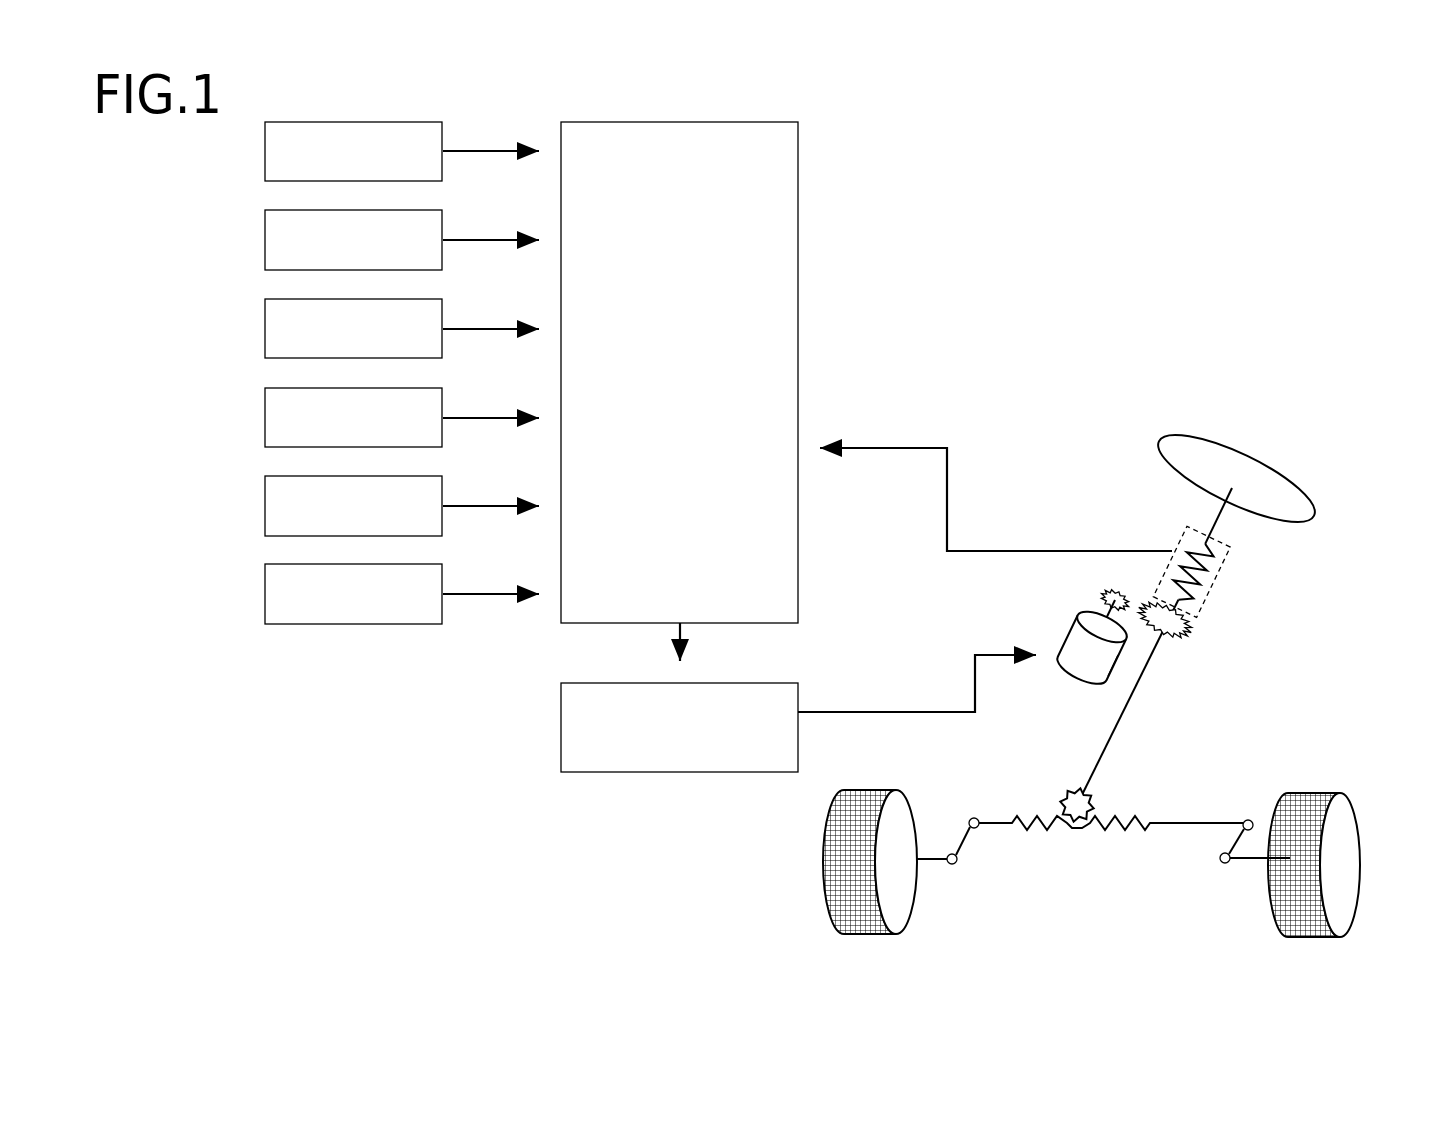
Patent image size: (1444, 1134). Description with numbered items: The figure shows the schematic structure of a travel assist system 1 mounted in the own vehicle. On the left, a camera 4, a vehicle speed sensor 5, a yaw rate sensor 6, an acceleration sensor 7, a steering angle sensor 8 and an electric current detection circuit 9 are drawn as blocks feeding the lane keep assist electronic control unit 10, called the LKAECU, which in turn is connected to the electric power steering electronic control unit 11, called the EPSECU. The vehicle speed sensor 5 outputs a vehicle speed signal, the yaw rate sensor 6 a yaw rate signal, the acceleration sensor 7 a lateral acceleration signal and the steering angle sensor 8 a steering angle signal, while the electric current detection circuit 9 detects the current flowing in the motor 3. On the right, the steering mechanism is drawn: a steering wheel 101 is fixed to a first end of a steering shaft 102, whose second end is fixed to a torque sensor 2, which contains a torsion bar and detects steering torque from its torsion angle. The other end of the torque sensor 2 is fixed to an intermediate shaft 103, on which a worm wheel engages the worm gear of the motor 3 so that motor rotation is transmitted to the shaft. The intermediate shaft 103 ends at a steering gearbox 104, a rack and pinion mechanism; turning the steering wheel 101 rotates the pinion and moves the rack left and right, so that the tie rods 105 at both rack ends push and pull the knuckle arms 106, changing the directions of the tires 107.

The travel assist system 1 is at (948, 180).
The torque sensor 2 is at (1218, 572).
The motor 3 is at (1080, 672).
The camera 4 is at (352, 121).
The vehicle speed sensor 5 is at (352, 209).
The yaw rate sensor 6 is at (352, 298).
The acceleration sensor 7 is at (352, 387).
The steering angle sensor 8 is at (352, 475).
The electric current detection circuit 9 is at (352, 563).
The lane keep assist electronic control unit 10 is at (798, 152).
The electric power steering electronic control unit 11 is at (740, 683).
The steering wheel 101 is at (1275, 498).
The steering shaft 102 is at (1207, 519).
The intermediate shaft 103 is at (1138, 688).
The steering gearbox 104 is at (1100, 806).
The tie rods 105 is at (1000, 826).
The knuckle arms 106 is at (935, 862).
The tires 107 is at (822, 858).